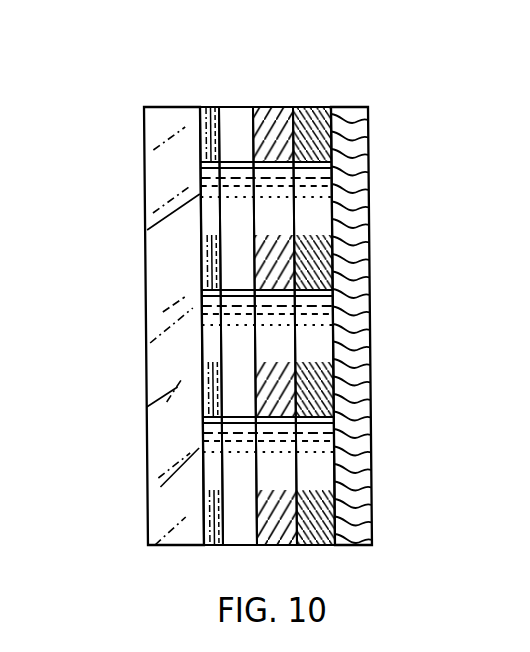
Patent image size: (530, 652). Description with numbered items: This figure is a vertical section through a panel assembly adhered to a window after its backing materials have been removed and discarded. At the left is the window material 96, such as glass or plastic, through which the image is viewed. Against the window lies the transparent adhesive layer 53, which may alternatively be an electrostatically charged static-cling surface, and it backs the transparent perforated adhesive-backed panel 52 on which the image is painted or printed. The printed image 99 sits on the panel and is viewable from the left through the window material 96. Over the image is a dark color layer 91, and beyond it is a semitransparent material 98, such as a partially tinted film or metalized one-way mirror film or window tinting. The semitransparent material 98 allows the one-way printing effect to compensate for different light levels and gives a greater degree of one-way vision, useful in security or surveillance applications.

The window material 96 is at (148, 182).
The transparent adhesive layer 53 is at (208, 108).
The panel 52 is at (238, 112).
The image 99 is at (275, 110).
The dark color layer 91 is at (313, 108).
The semitransparent material 98 is at (363, 180).